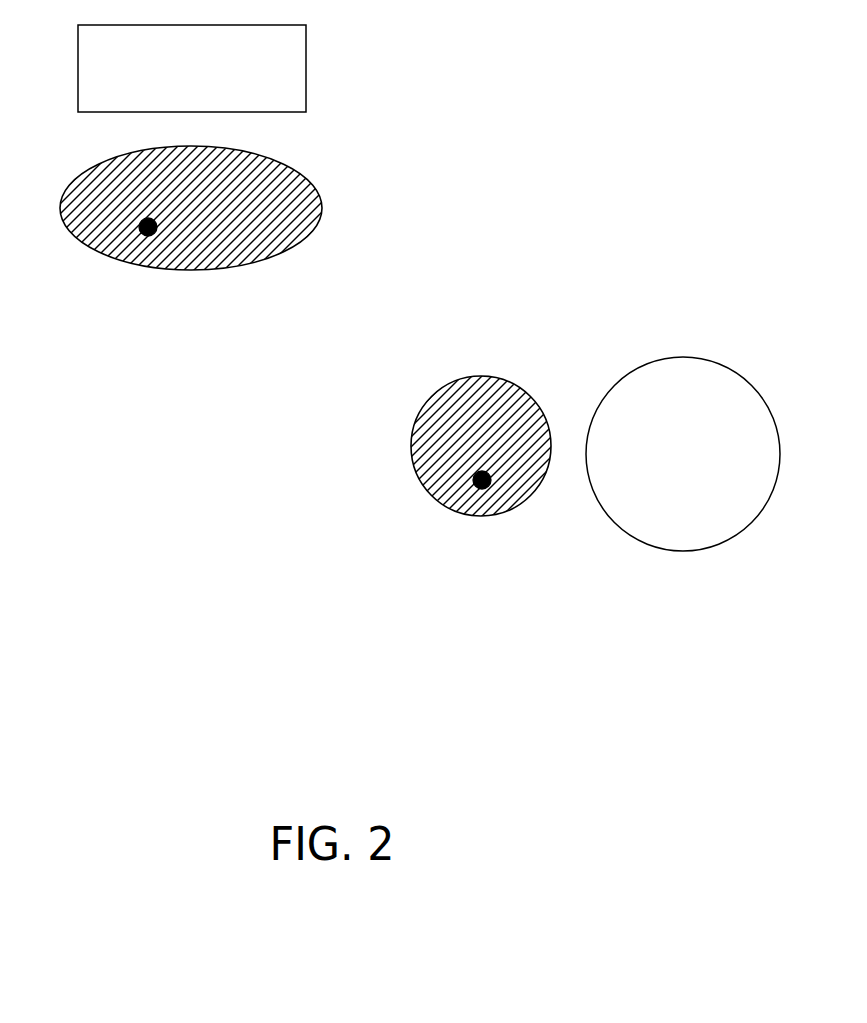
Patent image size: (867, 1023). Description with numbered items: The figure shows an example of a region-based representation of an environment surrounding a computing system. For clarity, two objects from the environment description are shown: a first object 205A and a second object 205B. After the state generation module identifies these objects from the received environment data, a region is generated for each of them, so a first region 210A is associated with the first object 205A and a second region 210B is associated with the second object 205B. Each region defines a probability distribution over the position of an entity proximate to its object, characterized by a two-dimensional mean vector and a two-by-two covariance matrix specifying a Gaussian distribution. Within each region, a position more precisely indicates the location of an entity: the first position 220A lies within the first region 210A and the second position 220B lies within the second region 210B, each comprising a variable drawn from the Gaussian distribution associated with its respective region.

The first object 205A is at (192, 68).
The first region 210A is at (327, 208).
The first position 220A is at (148, 240).
The second object 205B is at (683, 454).
The second region 210B is at (479, 375).
The second position 220B is at (482, 492).